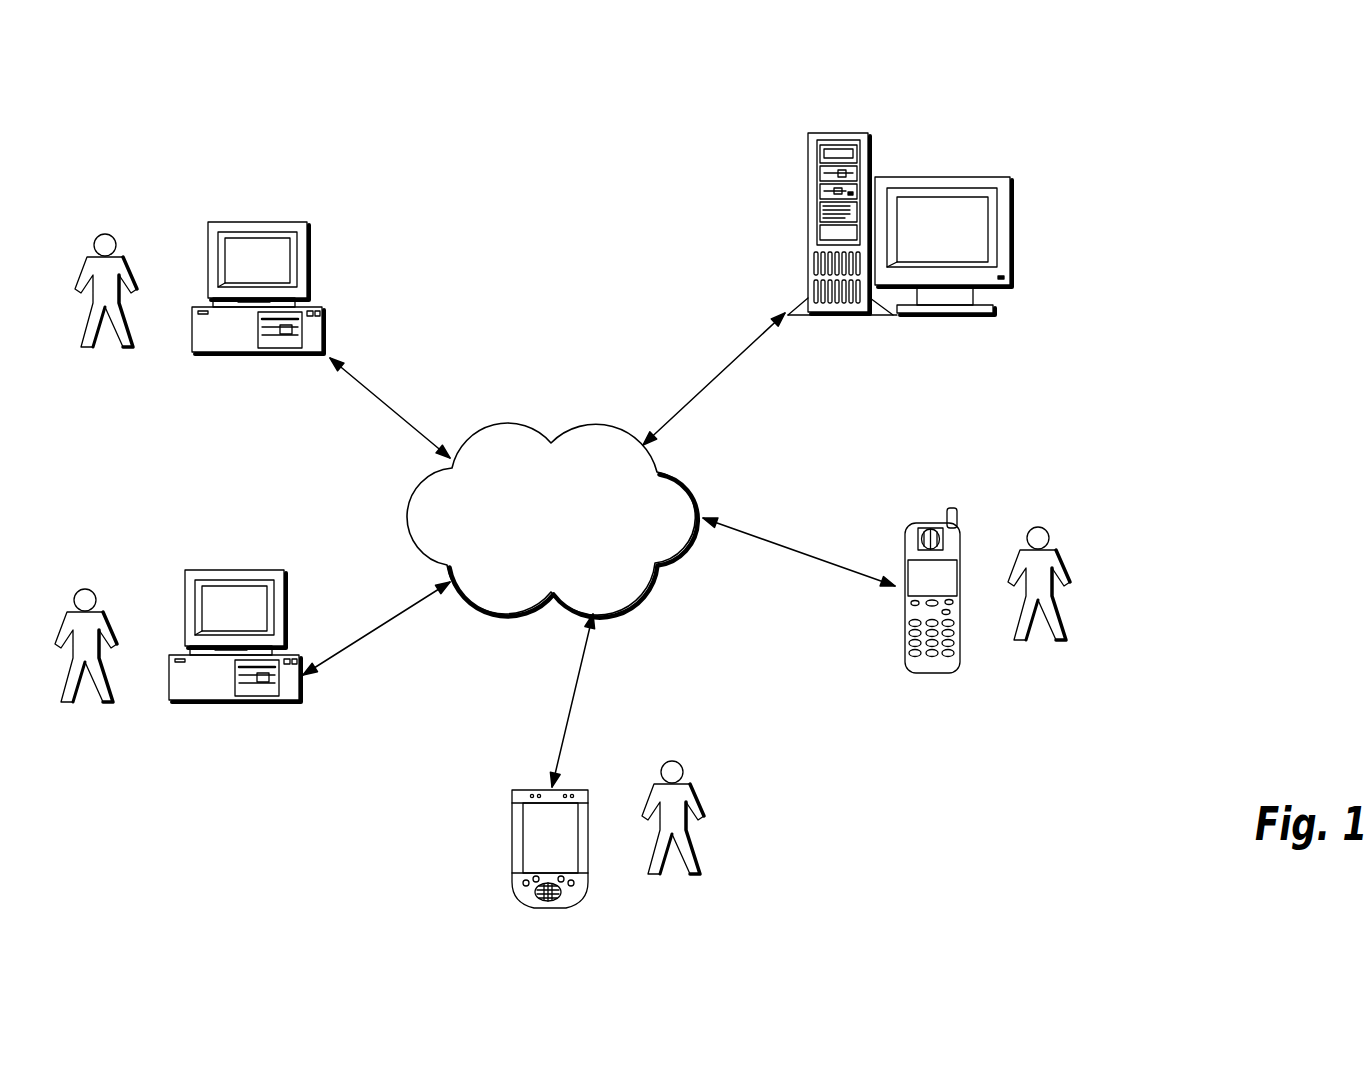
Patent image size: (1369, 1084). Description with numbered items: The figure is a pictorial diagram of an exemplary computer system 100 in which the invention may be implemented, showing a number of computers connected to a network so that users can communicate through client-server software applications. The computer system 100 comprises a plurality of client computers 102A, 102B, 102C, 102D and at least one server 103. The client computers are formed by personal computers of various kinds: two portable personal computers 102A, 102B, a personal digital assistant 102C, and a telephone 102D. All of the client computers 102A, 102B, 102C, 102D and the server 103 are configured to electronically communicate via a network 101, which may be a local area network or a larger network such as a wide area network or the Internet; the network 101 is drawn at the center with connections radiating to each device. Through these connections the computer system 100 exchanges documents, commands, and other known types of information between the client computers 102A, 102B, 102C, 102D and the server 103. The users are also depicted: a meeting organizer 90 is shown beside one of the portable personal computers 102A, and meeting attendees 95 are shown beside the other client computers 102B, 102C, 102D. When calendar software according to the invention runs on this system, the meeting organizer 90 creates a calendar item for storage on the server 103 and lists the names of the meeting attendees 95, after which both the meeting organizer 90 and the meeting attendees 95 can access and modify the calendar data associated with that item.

The computer system 100 is at (548, 232).
The network 101 is at (687, 482).
The client computer 102A is at (312, 265).
The client computer 102B is at (287, 603).
The client computer 102C is at (592, 805).
The client computer 102D is at (957, 518).
The server 103 is at (1013, 198).
The meeting organizer 90 is at (118, 240).
The meeting attendees 95 is at (98, 595).